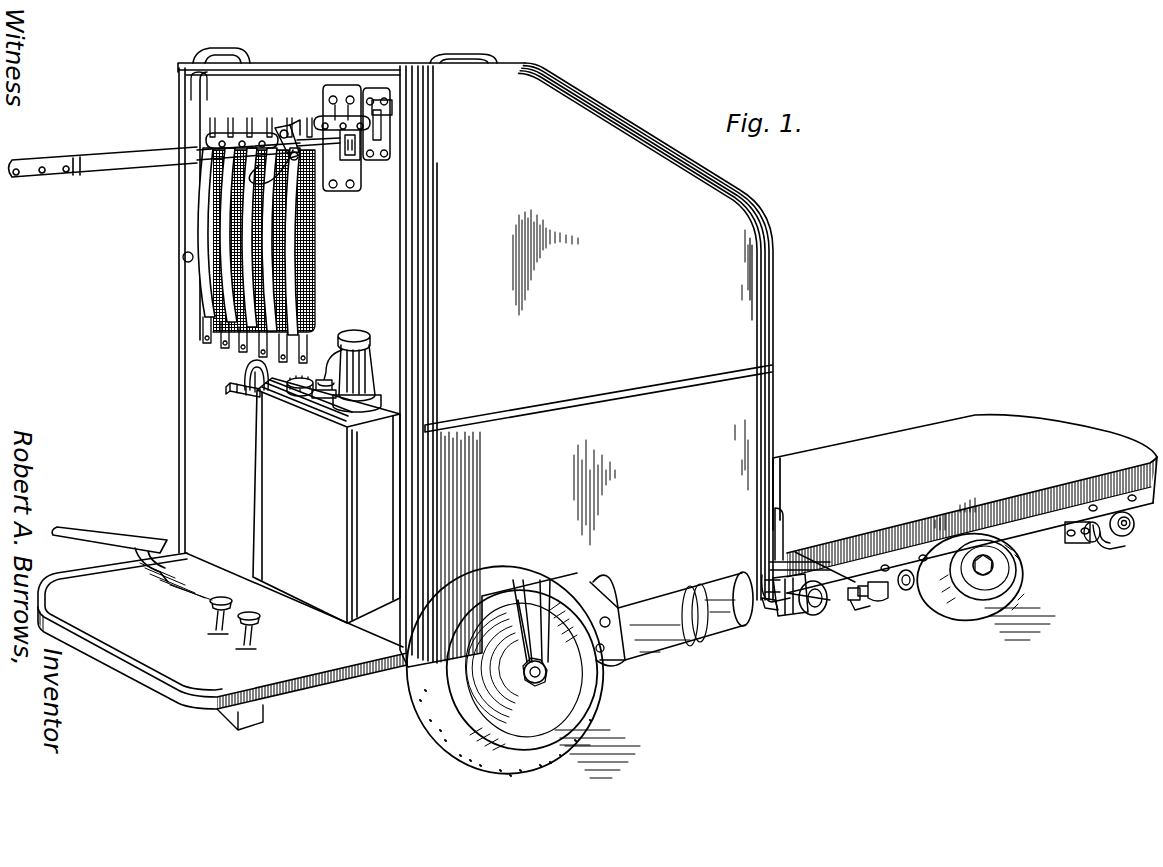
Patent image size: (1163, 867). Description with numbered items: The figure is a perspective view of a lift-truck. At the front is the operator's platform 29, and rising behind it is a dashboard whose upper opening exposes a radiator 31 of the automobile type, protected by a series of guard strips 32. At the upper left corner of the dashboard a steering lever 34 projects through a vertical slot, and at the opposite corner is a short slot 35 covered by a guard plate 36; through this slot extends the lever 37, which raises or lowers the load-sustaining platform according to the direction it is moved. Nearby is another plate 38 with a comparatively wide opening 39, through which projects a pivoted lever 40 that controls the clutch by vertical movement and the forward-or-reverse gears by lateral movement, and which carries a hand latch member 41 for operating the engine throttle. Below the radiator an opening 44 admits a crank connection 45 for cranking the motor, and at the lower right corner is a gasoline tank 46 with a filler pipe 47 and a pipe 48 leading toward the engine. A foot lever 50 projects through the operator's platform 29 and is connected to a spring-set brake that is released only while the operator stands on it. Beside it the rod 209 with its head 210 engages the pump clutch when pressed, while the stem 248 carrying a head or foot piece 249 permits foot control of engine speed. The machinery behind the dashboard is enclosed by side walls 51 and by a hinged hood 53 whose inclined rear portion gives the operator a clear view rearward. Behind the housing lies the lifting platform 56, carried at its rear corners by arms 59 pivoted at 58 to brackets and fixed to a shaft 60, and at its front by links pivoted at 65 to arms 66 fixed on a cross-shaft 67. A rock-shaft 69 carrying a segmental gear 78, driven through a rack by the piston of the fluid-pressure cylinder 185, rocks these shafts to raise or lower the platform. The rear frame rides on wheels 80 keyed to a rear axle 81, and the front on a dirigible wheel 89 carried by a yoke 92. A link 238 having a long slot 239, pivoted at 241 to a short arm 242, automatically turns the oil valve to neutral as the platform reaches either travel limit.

The platform 29 is at (192, 680).
The radiator 31 is at (318, 251).
The guard strips 32 is at (318, 286).
The steering lever 34 is at (84, 172).
The short slot 35 is at (370, 113).
The guard plate 36 is at (388, 130).
The lever 37 is at (378, 100).
The plate 38 is at (372, 182).
The opening 39 is at (318, 180).
The pivoted lever 40 is at (302, 128).
The hand latch member 41 is at (240, 172).
The opening 44 is at (252, 372).
The crank connection 45 is at (243, 394).
The gasoline tank 46 is at (265, 448).
The filler pipe 47 is at (376, 350).
The pipe 48 is at (330, 360).
The foot lever 50 is at (82, 545).
The side walls 51 is at (762, 397).
The hood 53 is at (765, 205).
The lifting platform 56 is at (1000, 420).
The pivot 58 is at (1124, 538).
The arm 59 is at (1108, 545).
The shaft 60 is at (1080, 535).
The pivot 65 is at (910, 590).
The arm 66 is at (900, 600).
The cross-shaft 67 is at (878, 600).
The rock-shaft 69 is at (815, 618).
The segmental gear 78 is at (790, 610).
The wheels 80 is at (990, 600).
The rear axle 81 is at (992, 570).
The dirigible wheel 89 is at (472, 740).
The yoke 92 is at (548, 660).
The fluid-pressure cylinder 185 is at (655, 640).
The rod 209 is at (238, 645).
The head 210 is at (258, 620).
The link 238 is at (788, 560).
The long slot 239 is at (818, 592).
The pivot 241 is at (765, 606).
The short arm 242 is at (760, 585).
The stem 248 is at (210, 625).
The head or foot piece 249 is at (210, 602).